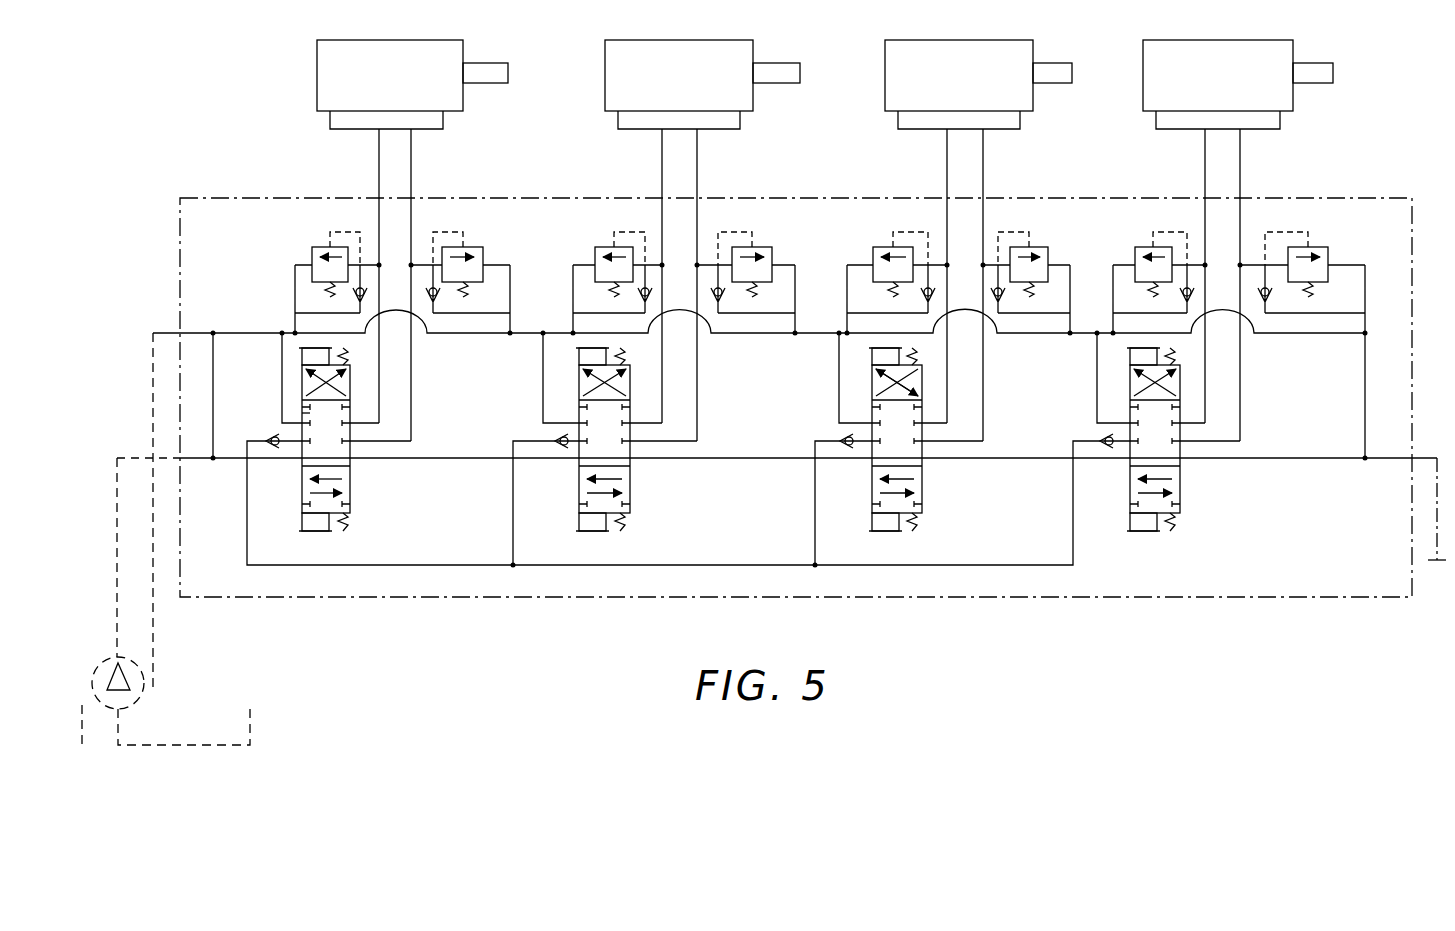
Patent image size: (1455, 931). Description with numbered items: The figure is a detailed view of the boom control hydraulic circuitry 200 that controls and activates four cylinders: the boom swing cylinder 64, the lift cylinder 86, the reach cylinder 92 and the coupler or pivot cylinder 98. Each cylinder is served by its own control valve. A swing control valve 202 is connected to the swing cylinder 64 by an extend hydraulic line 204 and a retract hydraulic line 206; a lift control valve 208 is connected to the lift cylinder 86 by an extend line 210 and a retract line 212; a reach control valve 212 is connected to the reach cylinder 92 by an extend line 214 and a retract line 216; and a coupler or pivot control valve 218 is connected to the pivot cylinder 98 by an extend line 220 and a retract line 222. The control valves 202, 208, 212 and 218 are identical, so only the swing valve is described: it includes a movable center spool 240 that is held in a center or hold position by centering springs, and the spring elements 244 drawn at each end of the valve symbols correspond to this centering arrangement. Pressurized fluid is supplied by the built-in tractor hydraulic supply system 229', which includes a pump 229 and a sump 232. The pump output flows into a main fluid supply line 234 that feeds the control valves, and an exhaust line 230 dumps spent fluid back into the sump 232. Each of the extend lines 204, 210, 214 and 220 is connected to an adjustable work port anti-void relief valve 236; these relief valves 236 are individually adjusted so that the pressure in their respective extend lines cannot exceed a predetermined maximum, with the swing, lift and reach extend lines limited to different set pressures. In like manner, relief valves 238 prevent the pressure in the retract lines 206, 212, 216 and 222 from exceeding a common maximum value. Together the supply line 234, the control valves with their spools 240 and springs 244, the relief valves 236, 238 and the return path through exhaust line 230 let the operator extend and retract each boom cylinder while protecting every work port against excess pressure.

The boom swing cylinder 64 is at (404, 87).
The lift cylinder 86 is at (686, 87).
The reach cylinder 92 is at (971, 87).
The coupler or pivot cylinder 98 is at (1231, 87).
The boom control hydraulic circuitry 200 is at (1412, 232).
The swing control valve 202 is at (352, 470).
The extend hydraulic line 204 is at (378, 167).
The retract hydraulic line 206 is at (411, 168).
The lift control valve 208 is at (632, 470).
The extend line 210 is at (662, 168).
The retract line / reach control valve 212 is at (697, 165).
The extend line 214 is at (947, 168).
The retract line 216 is at (983, 165).
The coupler or pivot control valve 218 is at (1182, 470).
The extend line 220 is at (1205, 168).
The retract line 222 is at (1240, 165).
The pump 229 is at (181, 521).
The tractor hydraulic supply system 229' is at (96, 654).
The exhaust line 230 is at (245, 332).
The sump 232 is at (250, 712).
The main fluid supply line 234 is at (198, 458).
The adjustable work port anti-void relief valve 236 is at (312, 262).
The relief valve 238 is at (470, 247).
The movable center spool 240 is at (302, 413).
The spring 244 is at (348, 355).